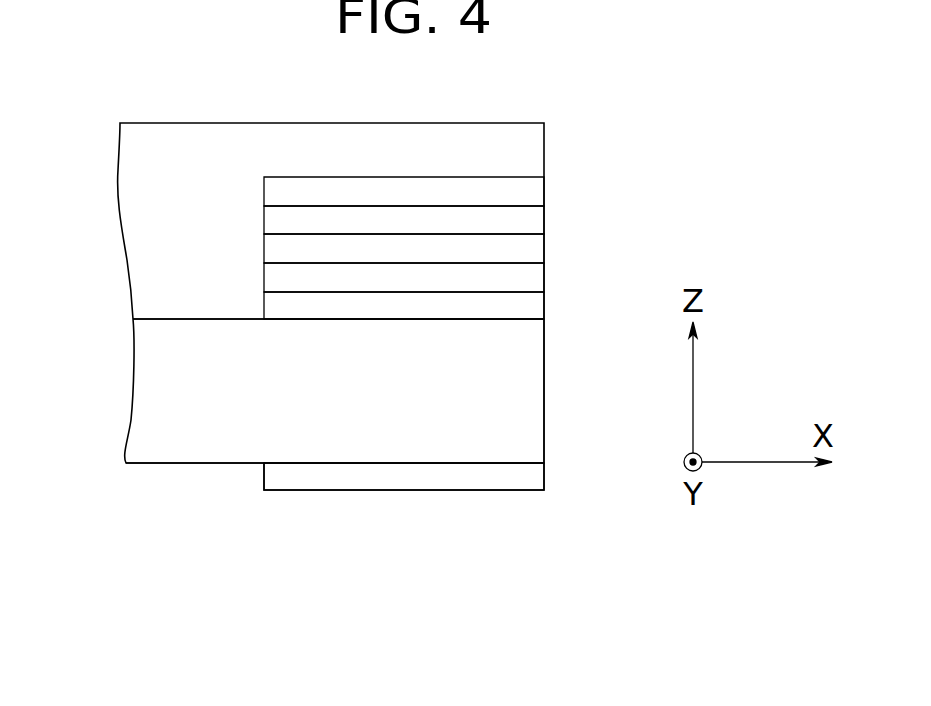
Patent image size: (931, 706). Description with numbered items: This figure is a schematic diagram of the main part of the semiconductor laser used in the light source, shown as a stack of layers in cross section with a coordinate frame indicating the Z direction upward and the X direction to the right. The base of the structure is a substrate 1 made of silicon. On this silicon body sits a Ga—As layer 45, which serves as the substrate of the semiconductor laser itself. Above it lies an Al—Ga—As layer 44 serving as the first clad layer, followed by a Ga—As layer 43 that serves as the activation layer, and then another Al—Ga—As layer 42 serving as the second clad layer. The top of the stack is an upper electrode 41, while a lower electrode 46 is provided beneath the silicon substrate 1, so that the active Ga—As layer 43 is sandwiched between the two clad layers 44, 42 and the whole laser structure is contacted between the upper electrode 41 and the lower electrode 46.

The substrate 1 is at (533, 394).
The upper electrode 41 is at (533, 192).
The Al—Ga—As layer 42 is at (530, 224).
The Ga—As layer 43 is at (531, 253).
The Al—Ga—As layer 44 is at (533, 277).
The Ga—As layer 45 is at (533, 306).
The lower electrode 46 is at (533, 477).